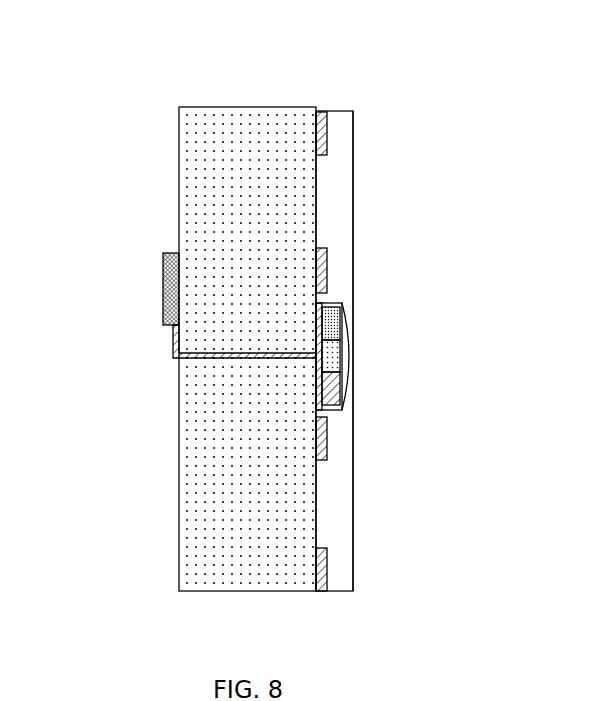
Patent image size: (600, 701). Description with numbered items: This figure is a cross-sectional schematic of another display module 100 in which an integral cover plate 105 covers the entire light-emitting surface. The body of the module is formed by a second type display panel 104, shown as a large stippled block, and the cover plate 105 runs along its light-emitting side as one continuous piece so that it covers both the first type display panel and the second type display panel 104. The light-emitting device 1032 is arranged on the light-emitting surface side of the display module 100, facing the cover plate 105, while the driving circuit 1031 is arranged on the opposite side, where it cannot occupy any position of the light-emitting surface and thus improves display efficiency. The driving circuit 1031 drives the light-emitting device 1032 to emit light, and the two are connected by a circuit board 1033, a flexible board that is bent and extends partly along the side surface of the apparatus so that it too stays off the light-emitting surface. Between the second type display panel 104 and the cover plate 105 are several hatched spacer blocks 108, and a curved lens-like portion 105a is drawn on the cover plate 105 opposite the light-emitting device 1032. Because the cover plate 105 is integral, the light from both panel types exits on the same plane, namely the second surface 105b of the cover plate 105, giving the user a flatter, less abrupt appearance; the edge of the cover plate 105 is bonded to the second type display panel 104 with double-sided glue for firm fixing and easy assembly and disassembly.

The display module 100 is at (276, 635).
The second type display panel 104 is at (245, 118).
The cover plate 105 is at (347, 503).
The lens portion of cover plate 105a is at (349, 355).
The second surface 105b is at (354, 555).
The support spacer 108 is at (318, 147).
The driving circuit 1031 is at (164, 282).
The light-emitting device 1032 is at (344, 312).
The circuit board 1033 is at (175, 359).